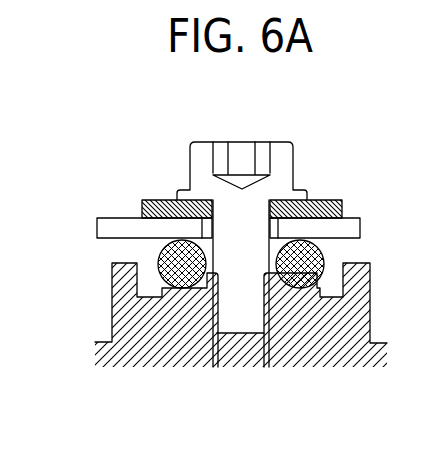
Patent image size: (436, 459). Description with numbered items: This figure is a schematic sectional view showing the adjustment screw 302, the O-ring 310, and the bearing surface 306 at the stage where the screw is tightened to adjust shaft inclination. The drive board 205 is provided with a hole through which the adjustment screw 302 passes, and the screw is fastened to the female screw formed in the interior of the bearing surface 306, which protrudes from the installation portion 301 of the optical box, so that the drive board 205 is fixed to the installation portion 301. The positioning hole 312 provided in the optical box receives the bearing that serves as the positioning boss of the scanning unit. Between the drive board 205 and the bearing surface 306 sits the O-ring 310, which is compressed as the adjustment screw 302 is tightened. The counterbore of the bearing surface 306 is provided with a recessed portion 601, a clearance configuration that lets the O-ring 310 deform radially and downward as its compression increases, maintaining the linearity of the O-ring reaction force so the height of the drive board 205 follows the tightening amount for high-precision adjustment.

The adjustment screw 302 is at (283, 160).
The positioning hole 312 is at (323, 196).
The drive board 205 is at (115, 227).
The O-ring 310 is at (156, 249).
The bearing surface 306 is at (111, 287).
The installation portion 301 is at (380, 343).
The recessed portion 601 is at (317, 290).